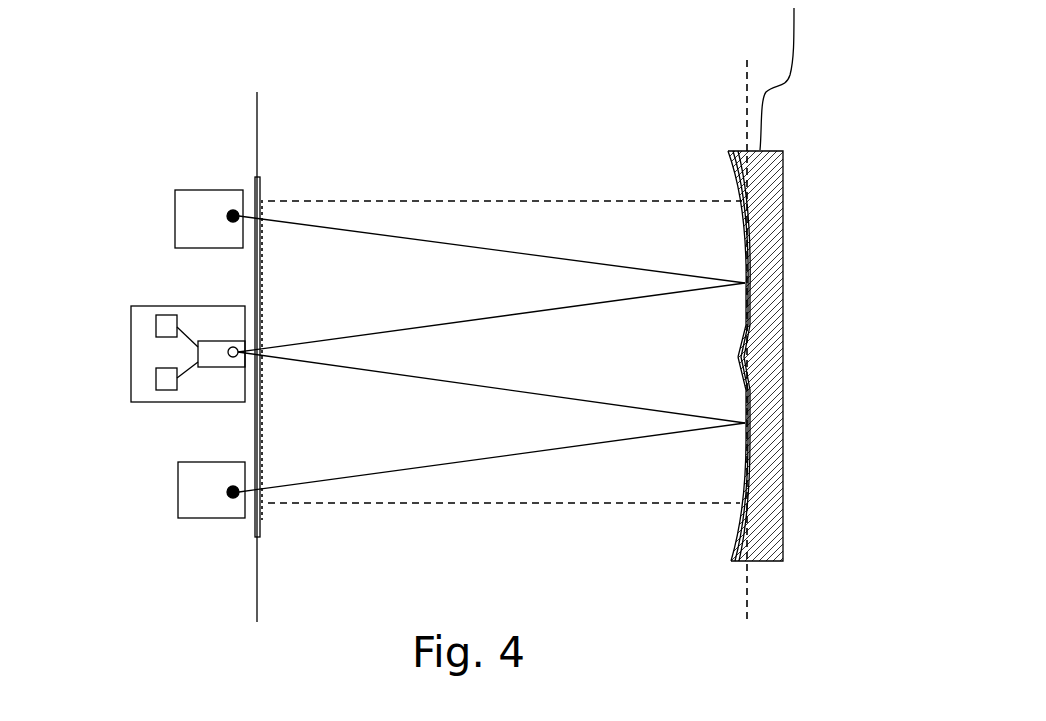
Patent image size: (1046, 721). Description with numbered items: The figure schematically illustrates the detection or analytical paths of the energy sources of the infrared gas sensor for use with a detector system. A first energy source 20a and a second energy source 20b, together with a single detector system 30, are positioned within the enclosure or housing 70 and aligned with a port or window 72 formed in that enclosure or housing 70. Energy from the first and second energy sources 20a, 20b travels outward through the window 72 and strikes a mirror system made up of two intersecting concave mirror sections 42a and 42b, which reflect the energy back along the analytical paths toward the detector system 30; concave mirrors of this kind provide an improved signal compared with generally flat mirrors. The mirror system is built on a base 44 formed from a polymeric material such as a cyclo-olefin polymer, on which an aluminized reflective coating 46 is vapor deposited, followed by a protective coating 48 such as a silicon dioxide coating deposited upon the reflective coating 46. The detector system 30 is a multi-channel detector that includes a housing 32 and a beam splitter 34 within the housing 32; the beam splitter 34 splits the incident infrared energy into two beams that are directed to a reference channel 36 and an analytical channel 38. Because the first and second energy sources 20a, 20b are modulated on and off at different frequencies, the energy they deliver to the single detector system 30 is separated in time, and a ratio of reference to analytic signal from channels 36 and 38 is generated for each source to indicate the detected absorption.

The first energy source 20a is at (189, 180).
The second energy source 20b is at (163, 490).
The detector system 30 is at (146, 332).
The housing 32 is at (127, 359).
The beam splitter 34 is at (208, 332).
The reference channel 36 is at (168, 313).
The analytical channel 38 is at (160, 388).
The enclosure or housing 70 is at (257, 122).
The port or window 72 is at (261, 186).
The mirror section 42a is at (740, 215).
The mirror section 42b is at (730, 465).
The base 44 is at (780, 535).
The reflective coating 46 is at (738, 565).
The protective coating 48 is at (730, 560).